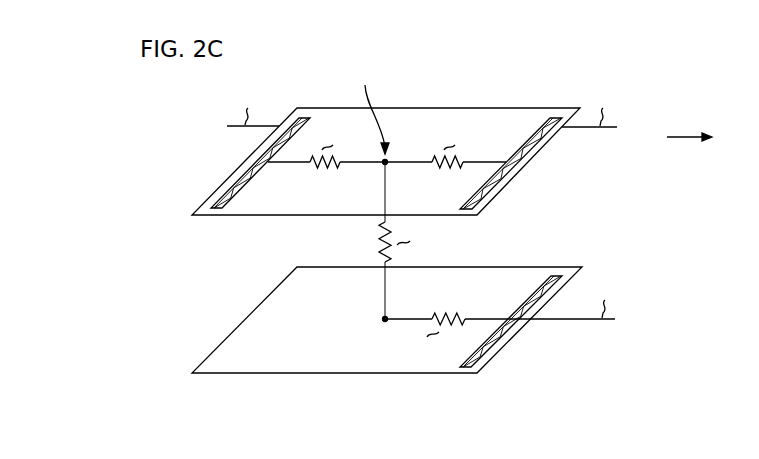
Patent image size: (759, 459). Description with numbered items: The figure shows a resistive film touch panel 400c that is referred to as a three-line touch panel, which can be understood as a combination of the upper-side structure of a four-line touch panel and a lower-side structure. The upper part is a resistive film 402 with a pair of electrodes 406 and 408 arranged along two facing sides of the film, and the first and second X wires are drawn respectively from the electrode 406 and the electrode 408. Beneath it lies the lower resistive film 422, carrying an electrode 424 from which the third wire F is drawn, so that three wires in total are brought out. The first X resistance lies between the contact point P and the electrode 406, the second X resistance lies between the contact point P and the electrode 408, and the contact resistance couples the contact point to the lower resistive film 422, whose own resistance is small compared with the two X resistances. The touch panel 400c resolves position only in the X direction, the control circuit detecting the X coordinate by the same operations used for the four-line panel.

The touch panel 400c is at (640, 106).
The resistive film 402 is at (418, 115).
The electrode 406 is at (242, 172).
The electrode 408 is at (508, 177).
The lower resistive film 422 is at (263, 313).
The third electrode 424 is at (511, 330).